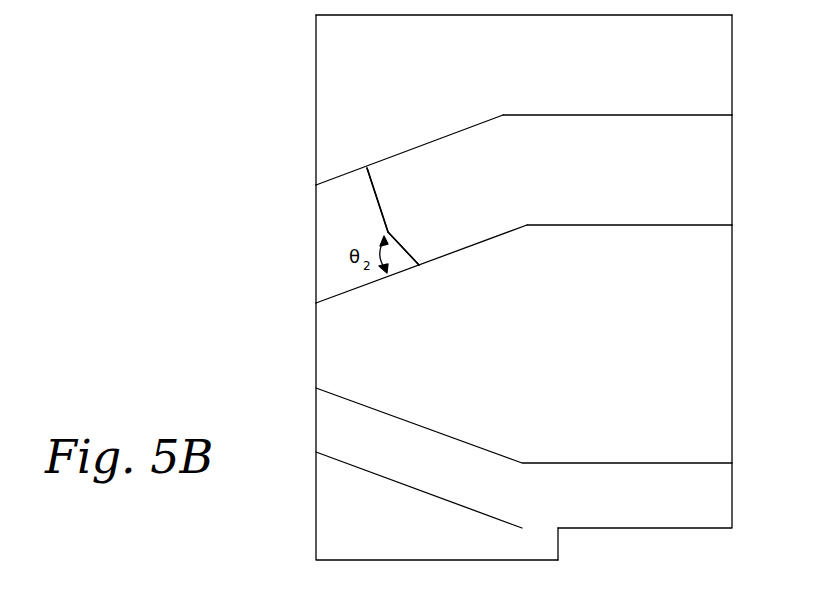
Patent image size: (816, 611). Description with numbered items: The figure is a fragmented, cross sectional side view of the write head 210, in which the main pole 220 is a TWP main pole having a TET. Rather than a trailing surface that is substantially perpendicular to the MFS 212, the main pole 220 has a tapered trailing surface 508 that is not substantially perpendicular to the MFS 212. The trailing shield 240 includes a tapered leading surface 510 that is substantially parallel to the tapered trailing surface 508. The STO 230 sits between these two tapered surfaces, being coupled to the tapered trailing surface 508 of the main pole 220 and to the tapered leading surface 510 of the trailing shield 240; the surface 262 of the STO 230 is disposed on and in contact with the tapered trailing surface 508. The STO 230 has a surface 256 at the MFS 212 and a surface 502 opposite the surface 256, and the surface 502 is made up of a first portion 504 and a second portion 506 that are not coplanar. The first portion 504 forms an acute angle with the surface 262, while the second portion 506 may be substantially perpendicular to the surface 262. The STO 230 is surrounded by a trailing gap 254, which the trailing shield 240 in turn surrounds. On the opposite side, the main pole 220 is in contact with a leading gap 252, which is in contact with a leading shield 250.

The write head 210 is at (232, 66).
The MFS 212 is at (316, 115).
The STO 230 is at (294, 263).
The surface 256 is at (316, 205).
The tapered leading surface 510 is at (470, 128).
The surface 262 is at (342, 295).
The tapered trailing surface 508 is at (497, 237).
The second portion 506 is at (372, 183).
The first portion 504 is at (410, 250).
The surface 502 is at (408, 216).
The trailing shield 240 is at (726, 60).
The trailing gap 254 is at (726, 168).
The main pole 220 is at (726, 403).
The leading gap 252 is at (726, 492).
The leading shield 250 is at (552, 543).